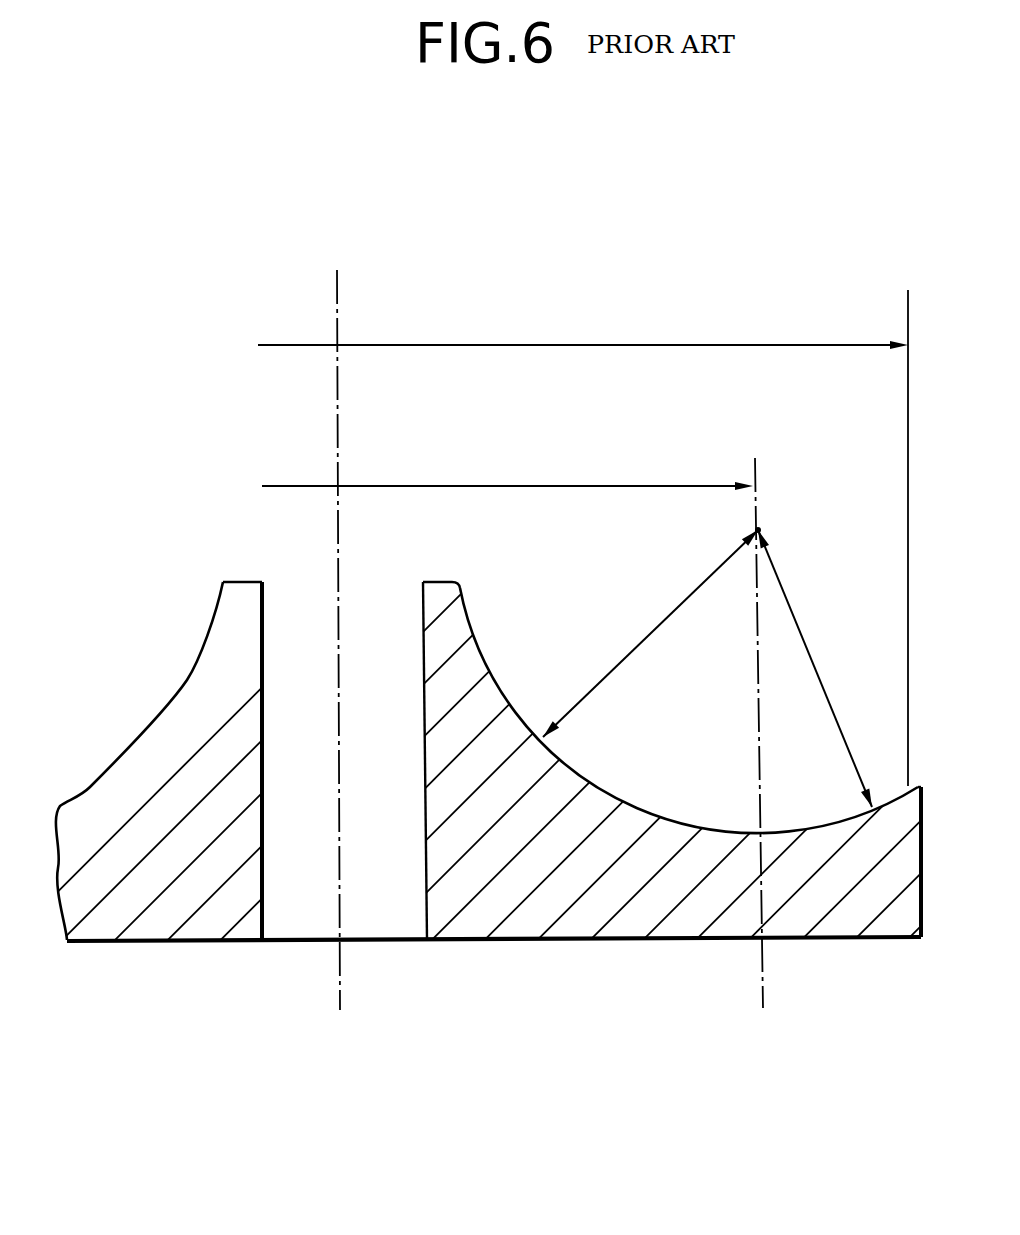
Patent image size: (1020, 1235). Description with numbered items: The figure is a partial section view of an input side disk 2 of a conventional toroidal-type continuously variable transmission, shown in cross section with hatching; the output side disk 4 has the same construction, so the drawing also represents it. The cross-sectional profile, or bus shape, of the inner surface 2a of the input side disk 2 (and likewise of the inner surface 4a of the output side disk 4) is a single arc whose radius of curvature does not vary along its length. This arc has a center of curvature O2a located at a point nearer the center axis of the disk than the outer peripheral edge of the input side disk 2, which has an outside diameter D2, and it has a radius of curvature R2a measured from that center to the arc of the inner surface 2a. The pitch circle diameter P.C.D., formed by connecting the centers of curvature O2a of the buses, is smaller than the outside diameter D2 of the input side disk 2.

The input side disk 2 is at (512, 815).
The output side disk 4 is at (832, 922).
The inner surface of the input side disk 2a is at (689, 799).
The inner surface of the output side disk 4a is at (618, 773).
The outside diameter of the input side disk D2 is at (622, 345).
The pitch circle diameter of the inner surface P.C.D. is at (550, 485).
The center of curvature O2a is at (758, 528).
The radius of curvature R2a is at (645, 637).